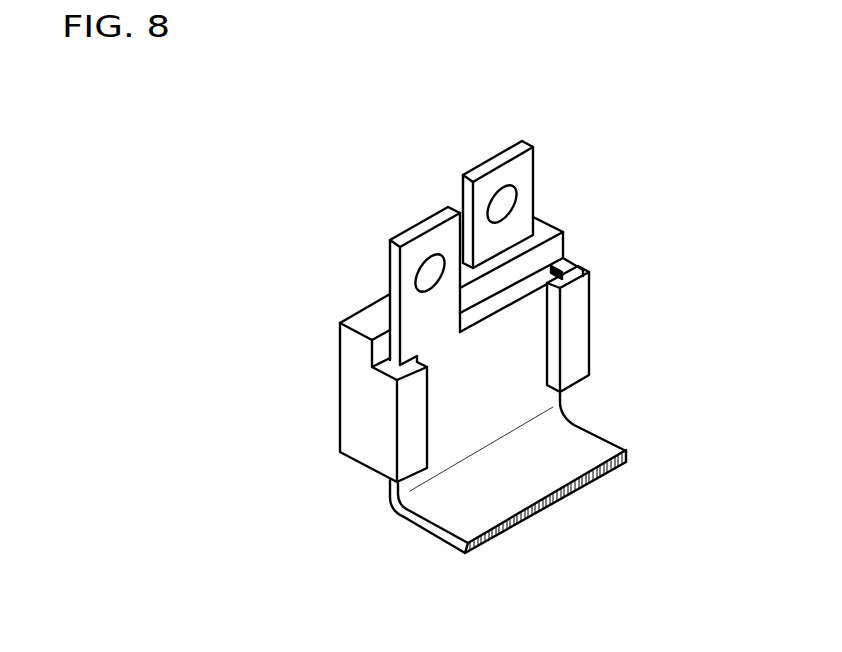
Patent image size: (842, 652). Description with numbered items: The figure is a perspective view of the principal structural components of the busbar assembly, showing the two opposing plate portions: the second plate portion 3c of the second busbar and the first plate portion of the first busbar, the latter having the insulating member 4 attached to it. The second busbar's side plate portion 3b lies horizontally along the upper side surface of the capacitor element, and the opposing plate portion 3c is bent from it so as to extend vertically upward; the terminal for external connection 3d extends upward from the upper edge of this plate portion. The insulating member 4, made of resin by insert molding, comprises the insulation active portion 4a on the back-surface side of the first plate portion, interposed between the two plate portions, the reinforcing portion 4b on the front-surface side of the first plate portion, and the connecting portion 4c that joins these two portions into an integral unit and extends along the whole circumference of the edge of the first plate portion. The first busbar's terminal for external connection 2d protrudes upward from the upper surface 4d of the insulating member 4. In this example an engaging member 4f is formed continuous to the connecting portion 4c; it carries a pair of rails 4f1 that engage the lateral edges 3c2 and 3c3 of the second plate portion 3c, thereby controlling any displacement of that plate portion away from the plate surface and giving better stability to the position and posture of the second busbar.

The terminal for external connection 2d is at (502, 152).
The side plate portion 3b is at (505, 478).
The opposing plate portion 3c is at (482, 373).
The lateral edge 3c2 is at (395, 358).
The lateral edge 3c3 is at (585, 268).
The terminal for external connection 3d is at (422, 226).
The insulating member 4 is at (476, 398).
The insulation active portion 4a is at (540, 253).
The reinforcing portion 4b is at (313, 342).
The connecting portion 4c is at (347, 407).
The upper surface 4d is at (377, 318).
The engaging member 4f is at (563, 425).
The rails 4f1 is at (573, 320).